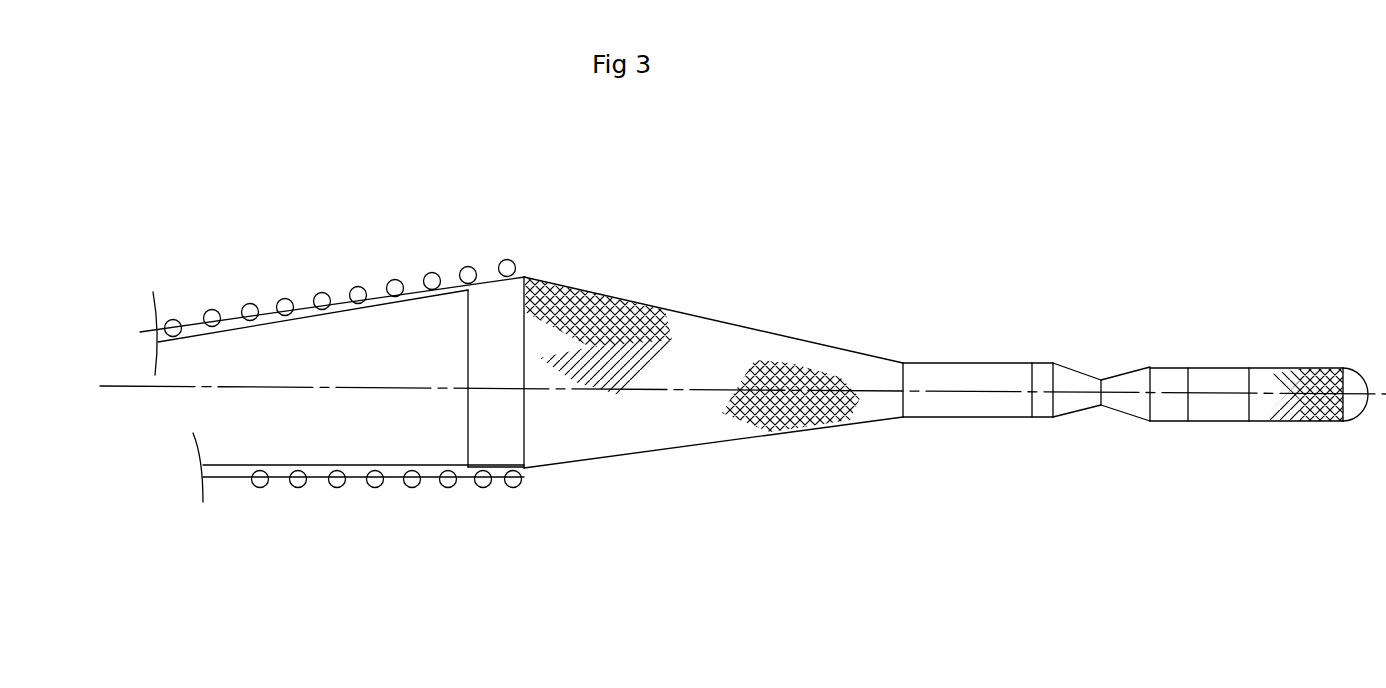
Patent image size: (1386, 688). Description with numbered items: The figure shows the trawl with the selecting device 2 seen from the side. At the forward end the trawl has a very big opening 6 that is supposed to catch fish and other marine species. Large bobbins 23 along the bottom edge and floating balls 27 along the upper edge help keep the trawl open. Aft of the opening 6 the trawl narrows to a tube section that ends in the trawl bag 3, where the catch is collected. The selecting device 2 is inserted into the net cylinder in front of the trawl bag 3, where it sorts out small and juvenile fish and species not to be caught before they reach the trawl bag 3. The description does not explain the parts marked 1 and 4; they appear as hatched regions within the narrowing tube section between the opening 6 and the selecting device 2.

The cone-shaped hatched section 1 is at (652, 307).
The selecting device 2 is at (1103, 375).
The trawl bag 3 is at (1328, 368).
The mixing zone 4 is at (706, 389).
The opening 6 is at (383, 347).
The bobbins 23 is at (373, 486).
The floating balls 27 is at (248, 302).